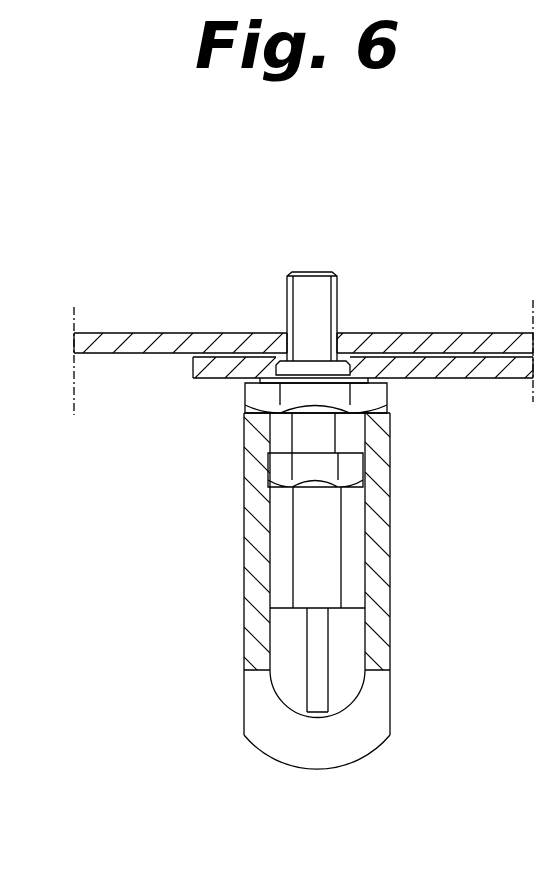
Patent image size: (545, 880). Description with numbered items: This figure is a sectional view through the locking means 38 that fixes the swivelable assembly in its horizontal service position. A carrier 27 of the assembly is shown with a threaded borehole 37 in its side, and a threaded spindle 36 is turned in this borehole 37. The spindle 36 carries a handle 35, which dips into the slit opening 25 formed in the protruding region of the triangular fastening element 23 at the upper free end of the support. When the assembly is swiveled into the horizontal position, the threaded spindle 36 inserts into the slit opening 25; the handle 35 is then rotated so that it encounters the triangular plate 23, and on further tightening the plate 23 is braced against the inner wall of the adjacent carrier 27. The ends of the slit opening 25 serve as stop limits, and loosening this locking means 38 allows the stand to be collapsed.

The fastening element 23 is at (457, 367).
The slit opening 25 is at (275, 370).
The carrier 27 is at (422, 342).
The handle 35 is at (380, 563).
The threaded spindle 36 is at (318, 302).
The threaded borehole 37 is at (340, 332).
The locking means 38 is at (195, 493).